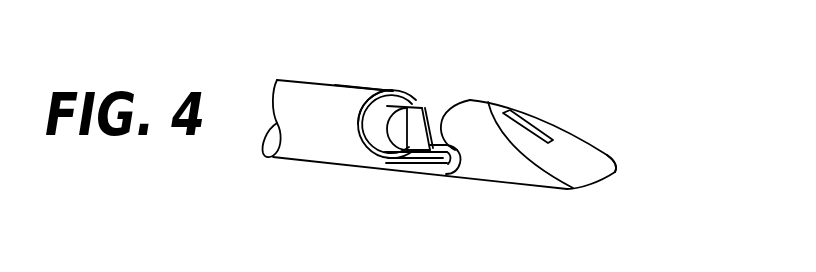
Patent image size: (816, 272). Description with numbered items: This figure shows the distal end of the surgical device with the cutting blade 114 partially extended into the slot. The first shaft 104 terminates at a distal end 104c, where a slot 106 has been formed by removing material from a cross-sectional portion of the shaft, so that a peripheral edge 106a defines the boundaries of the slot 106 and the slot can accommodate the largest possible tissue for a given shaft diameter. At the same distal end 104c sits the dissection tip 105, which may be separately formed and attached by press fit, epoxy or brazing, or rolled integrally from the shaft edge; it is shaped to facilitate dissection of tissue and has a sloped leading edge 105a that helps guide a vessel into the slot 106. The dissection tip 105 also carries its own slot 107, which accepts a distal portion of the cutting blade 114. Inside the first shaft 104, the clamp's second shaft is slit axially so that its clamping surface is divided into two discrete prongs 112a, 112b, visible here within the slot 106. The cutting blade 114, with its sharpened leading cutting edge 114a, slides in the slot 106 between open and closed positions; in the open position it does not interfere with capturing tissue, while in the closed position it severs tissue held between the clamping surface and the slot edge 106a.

The first shaft 104 is at (301, 81).
The distal end of the first shaft 104c is at (350, 116).
The dissection tip 105 is at (602, 141).
The sloped leading edge 105a is at (600, 155).
The slot 106 is at (437, 94).
The peripheral edge of the slot 106a is at (397, 90).
The slot in the dissection tip 107 is at (537, 131).
The first prong of the clamping surface 112a is at (388, 152).
The second prong of the clamping surface 112b is at (437, 124).
The cutting blade 114 is at (420, 156).
The leading cutting edge 114a is at (452, 150).